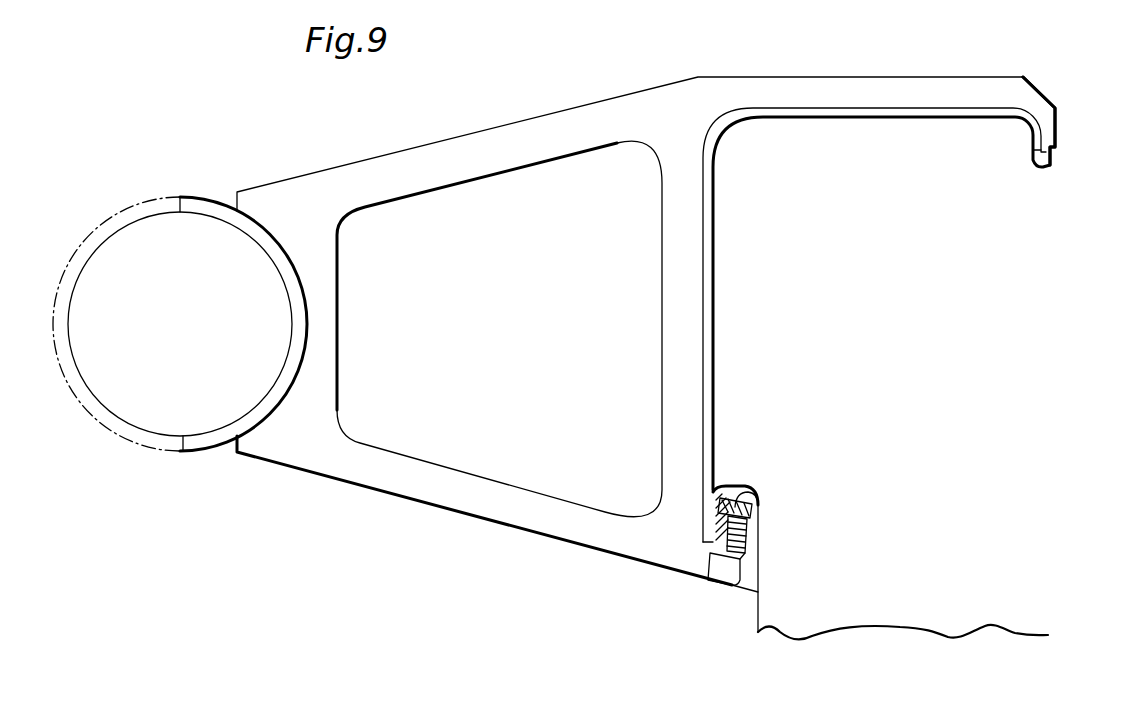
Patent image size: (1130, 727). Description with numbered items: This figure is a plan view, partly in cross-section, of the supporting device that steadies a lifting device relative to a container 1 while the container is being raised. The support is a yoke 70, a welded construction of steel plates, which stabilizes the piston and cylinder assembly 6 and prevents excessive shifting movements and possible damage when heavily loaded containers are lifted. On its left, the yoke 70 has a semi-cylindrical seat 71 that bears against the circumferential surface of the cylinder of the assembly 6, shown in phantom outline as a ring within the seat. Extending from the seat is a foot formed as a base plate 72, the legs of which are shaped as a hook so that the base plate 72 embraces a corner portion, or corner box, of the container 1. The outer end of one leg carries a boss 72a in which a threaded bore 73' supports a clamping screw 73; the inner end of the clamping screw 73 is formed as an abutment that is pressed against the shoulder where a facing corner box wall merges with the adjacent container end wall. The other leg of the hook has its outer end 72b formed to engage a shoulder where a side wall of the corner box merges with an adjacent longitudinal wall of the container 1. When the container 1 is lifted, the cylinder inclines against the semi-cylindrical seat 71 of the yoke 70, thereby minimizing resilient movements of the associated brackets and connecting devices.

The container 1 is at (920, 390).
The piston and cylinder assembly 6 is at (192, 387).
The yoke 70 is at (568, 99).
The semi-cylindrical seat 71 is at (298, 297).
The base plate 72 is at (700, 342).
The boss 72a is at (720, 505).
The outer end of the other leg 72b is at (1048, 124).
The clamping screw 73 is at (689, 580).
The threaded bore 73' is at (773, 522).